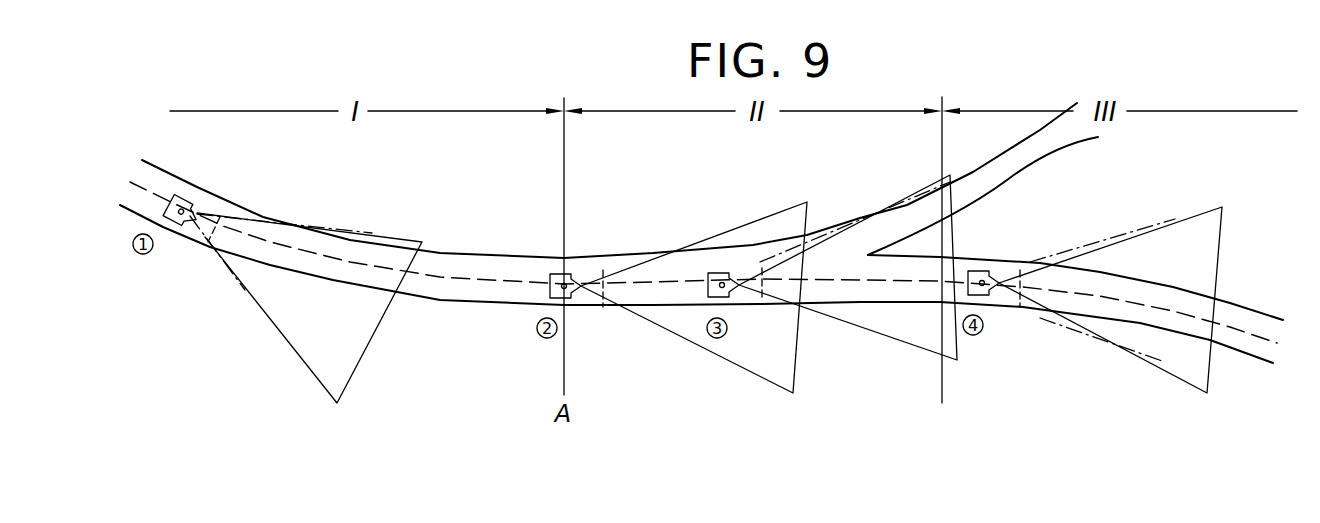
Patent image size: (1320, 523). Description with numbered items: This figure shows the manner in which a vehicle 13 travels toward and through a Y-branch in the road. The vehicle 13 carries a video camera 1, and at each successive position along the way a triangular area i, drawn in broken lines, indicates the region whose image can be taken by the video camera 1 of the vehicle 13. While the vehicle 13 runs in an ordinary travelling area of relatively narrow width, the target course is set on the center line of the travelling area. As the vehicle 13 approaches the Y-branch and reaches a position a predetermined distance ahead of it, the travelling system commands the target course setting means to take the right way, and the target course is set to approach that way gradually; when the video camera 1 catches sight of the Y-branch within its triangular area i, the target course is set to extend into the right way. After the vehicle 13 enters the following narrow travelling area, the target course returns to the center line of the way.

The video camera 1 is at (194, 222).
The vehicle 13 is at (188, 198).
The triangular area i is at (372, 233).